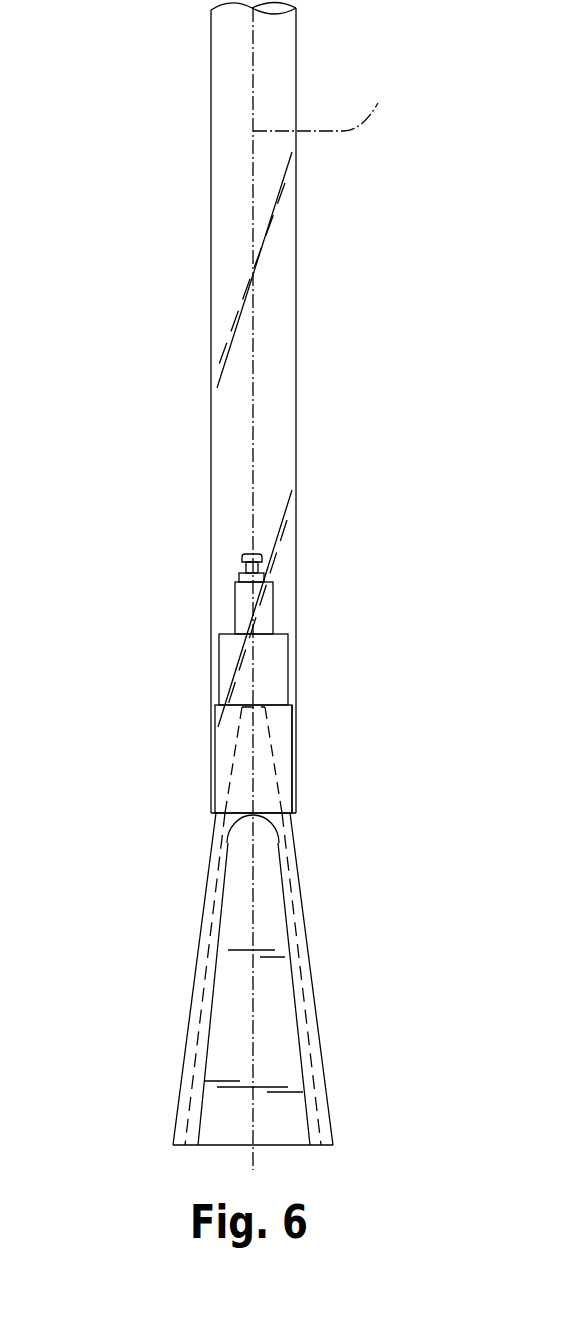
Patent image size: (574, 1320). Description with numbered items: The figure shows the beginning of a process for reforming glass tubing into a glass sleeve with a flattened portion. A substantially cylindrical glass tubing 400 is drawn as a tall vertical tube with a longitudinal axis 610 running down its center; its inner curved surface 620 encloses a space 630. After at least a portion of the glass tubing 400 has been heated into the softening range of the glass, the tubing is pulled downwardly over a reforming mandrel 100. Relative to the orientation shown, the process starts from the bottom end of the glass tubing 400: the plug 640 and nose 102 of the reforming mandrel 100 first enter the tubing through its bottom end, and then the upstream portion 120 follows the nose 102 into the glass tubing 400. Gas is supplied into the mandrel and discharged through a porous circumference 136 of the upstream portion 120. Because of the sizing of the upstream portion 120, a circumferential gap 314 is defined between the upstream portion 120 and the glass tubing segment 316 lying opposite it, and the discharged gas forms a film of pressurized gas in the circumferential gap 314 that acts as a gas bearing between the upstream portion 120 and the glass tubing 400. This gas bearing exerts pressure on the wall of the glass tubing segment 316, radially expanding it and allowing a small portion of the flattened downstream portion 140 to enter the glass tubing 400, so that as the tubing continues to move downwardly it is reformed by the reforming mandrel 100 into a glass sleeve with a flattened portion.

The reforming mandrel 100 is at (252, 683).
The nose 102 is at (217, 642).
The upstream portion 120 is at (222, 748).
The porous circumference 136 is at (210, 790).
The downstream portion 140 is at (190, 1008).
The circumferential gap 314 is at (296, 750).
The glass tubing segment 316 is at (211, 655).
The glass tubing 400 is at (210, 313).
The longitudinal axis 610 is at (335, 109).
The inner curved surface 620 is at (296, 226).
The space 630 is at (270, 312).
The plug 640 is at (270, 595).